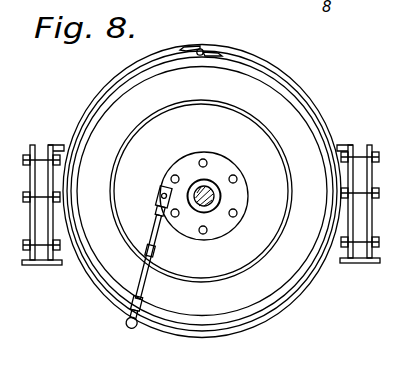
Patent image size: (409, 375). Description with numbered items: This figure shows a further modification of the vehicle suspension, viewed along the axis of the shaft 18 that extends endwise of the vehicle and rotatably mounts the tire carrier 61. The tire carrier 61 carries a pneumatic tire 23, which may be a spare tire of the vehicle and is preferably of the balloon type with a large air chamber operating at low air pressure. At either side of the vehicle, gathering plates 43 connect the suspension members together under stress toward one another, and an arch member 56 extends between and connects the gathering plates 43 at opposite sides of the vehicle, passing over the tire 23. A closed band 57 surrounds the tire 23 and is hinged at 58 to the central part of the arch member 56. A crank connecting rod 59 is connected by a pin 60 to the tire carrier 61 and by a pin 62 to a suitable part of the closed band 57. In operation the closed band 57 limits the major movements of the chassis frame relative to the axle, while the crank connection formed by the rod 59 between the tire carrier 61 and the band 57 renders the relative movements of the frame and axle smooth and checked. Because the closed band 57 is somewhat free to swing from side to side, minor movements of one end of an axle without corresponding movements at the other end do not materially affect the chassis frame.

The shaft 18 is at (208, 193).
The pneumatic tire 23 is at (278, 100).
The gathering plates 43 is at (48, 250).
The arch member 56 is at (180, 44).
The closed band 57 is at (255, 322).
The hinge 58 is at (213, 47).
The crank connecting rod 59 is at (145, 262).
The pin 60 is at (158, 193).
The tire carrier 61 is at (283, 191).
The pin 62 is at (137, 328).